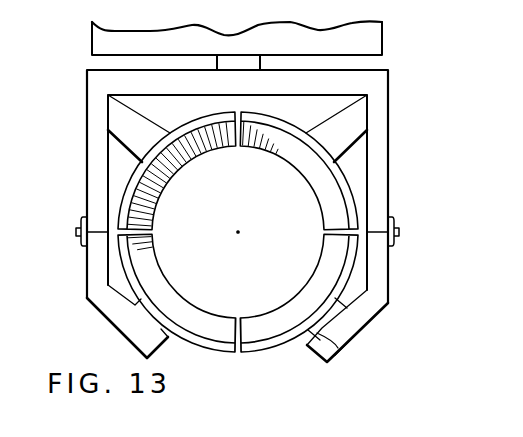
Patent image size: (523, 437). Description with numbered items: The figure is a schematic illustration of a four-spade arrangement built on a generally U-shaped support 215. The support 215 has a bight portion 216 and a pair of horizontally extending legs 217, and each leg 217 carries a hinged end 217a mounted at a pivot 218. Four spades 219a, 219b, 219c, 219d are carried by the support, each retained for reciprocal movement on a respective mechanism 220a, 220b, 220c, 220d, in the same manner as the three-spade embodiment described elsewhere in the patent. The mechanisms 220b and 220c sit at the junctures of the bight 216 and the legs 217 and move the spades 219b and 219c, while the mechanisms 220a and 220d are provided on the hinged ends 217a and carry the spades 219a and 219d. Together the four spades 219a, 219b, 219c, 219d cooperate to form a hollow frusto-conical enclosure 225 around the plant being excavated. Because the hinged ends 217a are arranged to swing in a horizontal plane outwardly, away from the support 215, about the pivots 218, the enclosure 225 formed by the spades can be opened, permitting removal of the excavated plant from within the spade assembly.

The U-shaped support 215 is at (388, 103).
The bight portion 216 is at (254, 92).
The horizontally extending legs 217 is at (93, 138).
The hinged end 217a is at (117, 312).
The pivots 218 is at (78, 232).
The spade 219a is at (152, 269).
The spade 219b is at (163, 190).
The spade 219c is at (327, 188).
The spade 219d is at (333, 262).
The spade mechanism 220a is at (165, 332).
The spade mechanism 220b is at (128, 122).
The spade mechanism 220c is at (340, 133).
The spade mechanism 220d is at (338, 355).
The hollow frusto-conical enclosure 225 is at (263, 350).